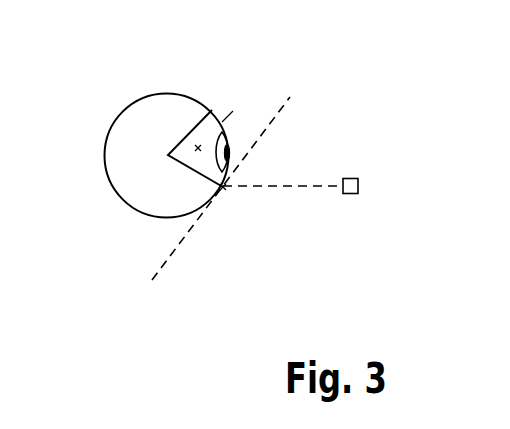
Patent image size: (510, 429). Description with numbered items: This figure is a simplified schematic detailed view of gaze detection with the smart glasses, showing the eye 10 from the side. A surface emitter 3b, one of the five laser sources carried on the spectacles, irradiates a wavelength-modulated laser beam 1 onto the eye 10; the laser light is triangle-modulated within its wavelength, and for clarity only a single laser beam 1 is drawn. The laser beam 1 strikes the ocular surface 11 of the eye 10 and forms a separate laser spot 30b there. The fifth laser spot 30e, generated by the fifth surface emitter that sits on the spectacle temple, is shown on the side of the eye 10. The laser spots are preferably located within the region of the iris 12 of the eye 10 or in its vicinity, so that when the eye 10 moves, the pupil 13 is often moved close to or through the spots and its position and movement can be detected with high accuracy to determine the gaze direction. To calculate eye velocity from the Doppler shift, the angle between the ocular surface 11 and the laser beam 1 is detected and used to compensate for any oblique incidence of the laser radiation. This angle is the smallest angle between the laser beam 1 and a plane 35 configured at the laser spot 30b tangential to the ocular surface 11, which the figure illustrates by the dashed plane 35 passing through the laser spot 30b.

The eye 10 is at (131, 66).
The fifth laser spot 30e is at (198, 146).
The iris 12 is at (219, 120).
The ocular surface 11 is at (226, 121).
The pupil 13 is at (230, 151).
The plane 35 is at (289, 93).
The laser beam 1 is at (289, 189).
The surface emitter 3b is at (351, 195).
The laser spot 30b is at (224, 189).